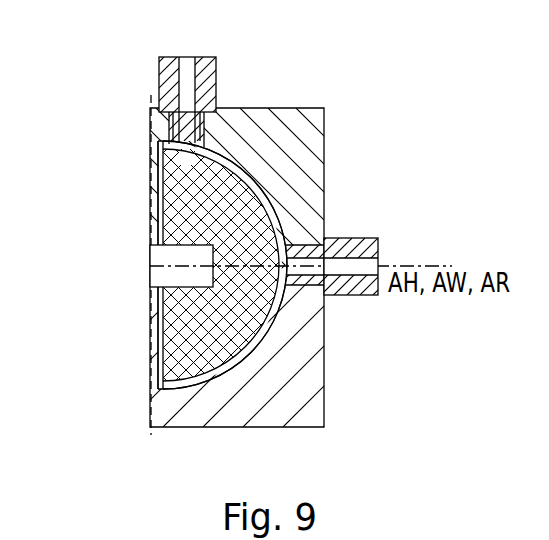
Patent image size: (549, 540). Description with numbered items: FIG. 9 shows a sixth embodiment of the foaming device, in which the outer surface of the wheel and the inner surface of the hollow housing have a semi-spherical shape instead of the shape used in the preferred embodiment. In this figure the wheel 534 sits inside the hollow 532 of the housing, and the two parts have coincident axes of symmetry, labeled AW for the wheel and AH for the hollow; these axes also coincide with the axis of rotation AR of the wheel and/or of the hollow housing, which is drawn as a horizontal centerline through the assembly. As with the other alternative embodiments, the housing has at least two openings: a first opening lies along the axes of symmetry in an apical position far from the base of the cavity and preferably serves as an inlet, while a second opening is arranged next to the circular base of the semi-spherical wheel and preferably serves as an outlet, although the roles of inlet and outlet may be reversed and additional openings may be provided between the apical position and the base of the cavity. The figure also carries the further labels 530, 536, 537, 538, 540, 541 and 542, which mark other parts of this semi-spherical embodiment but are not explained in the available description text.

The nozzle assembly 530 is at (372, 110).
The hollow 532 is at (250, 190).
The wheel 534 is at (234, 339).
The hemispherical shell 536 is at (203, 377).
The outlet port fitting 537 is at (368, 263).
The inlet fitting 538 is at (190, 82).
The outer surface of shell 540 is at (283, 290).
The insert plug 541 is at (175, 199).
The flat face of shell 542 is at (150, 389).